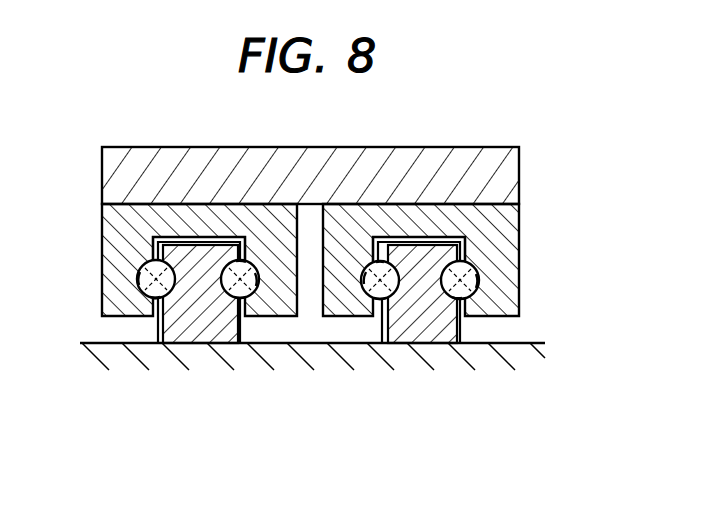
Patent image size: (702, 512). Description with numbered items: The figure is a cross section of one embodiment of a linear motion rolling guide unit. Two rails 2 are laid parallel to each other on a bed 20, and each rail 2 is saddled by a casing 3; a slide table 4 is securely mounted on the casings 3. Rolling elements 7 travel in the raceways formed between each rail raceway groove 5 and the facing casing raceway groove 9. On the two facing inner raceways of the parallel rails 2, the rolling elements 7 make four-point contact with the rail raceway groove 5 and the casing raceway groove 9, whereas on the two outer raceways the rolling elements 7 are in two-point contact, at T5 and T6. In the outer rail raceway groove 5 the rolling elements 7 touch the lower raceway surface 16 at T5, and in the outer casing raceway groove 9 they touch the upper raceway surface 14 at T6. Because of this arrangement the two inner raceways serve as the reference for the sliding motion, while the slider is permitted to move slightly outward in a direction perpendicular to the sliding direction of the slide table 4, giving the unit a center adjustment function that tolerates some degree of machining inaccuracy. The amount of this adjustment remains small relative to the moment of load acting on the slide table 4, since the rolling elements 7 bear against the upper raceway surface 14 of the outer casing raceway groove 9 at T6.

The rail 2 is at (198, 330).
The casing 3 is at (110, 248).
The slide table 4 is at (450, 178).
The rail raceway groove 5 is at (163, 238).
The rolling element 7 is at (148, 297).
The casing raceway groove 9 is at (255, 266).
The upper raceway surface 14 is at (143, 288).
The lower raceway surface 16 is at (244, 258).
The bed 20 is at (318, 355).
The contact point T5 is at (163, 326).
The contact point T6 is at (146, 262).